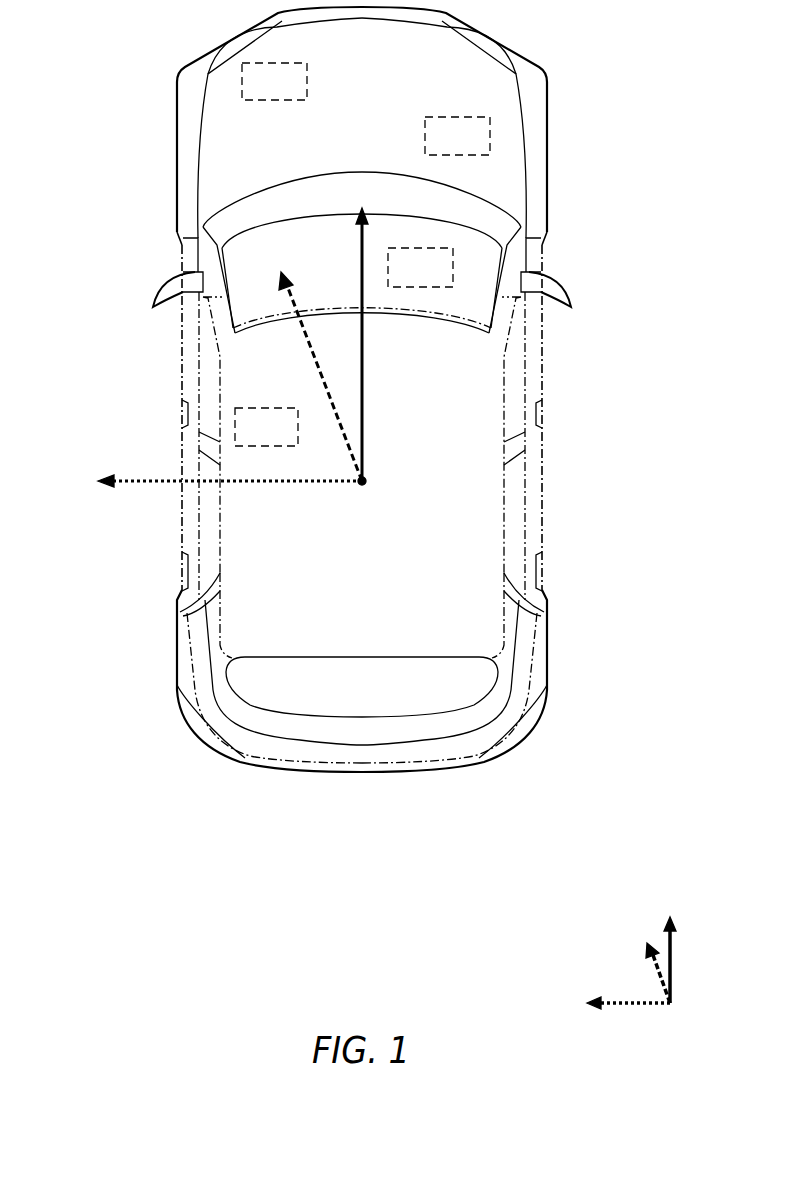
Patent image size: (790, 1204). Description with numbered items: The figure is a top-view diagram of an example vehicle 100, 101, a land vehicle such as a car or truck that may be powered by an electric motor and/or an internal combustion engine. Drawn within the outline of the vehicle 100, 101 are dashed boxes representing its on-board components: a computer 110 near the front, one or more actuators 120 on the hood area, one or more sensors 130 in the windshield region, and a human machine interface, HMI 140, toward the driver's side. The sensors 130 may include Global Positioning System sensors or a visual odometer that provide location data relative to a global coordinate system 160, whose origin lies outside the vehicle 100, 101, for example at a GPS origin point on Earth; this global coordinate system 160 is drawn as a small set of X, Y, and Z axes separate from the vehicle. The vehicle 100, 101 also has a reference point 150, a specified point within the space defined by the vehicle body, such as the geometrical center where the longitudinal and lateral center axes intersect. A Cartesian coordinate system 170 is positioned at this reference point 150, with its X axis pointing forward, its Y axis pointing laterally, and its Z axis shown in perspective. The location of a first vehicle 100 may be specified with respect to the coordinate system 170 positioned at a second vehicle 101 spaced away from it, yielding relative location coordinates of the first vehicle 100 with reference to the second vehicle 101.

The vehicle 100 is at (419, 389).
The vehicle 101 is at (547, 657).
The computer 110 is at (274, 81).
The actuator 120 is at (457, 136).
The sensor 130 is at (420, 267).
The human machine interface 140 is at (266, 427).
The reference point 150 is at (366, 479).
The global coordinate system 160 is at (592, 914).
The coordinate system 170 is at (142, 520).